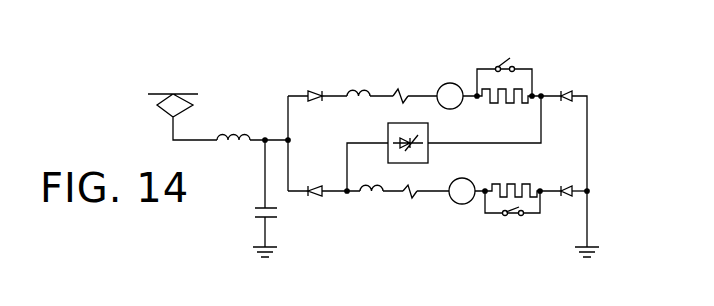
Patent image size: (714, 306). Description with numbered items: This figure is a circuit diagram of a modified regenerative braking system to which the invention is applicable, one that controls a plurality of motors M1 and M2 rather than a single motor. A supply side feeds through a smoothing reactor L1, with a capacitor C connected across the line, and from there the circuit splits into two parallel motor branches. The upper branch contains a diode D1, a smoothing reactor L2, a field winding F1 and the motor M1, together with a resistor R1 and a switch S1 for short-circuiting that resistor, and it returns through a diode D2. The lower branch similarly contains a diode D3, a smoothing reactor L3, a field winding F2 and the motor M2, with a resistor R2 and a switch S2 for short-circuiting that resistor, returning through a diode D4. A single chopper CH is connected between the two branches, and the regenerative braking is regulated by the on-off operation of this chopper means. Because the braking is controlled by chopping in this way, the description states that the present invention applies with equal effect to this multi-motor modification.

The smoothing reactor L1 is at (220, 133).
The capacitor C is at (257, 212).
The diode D1 is at (316, 88).
The smoothing reactor L2 is at (350, 88).
The field winding F1 is at (404, 88).
The motor M1 is at (449, 83).
The switch S1 is at (513, 48).
The resistor R1 is at (486, 104).
The diode D2 is at (566, 88).
The chopper CH is at (400, 123).
The diode D3 is at (320, 194).
The smoothing reactor L3 is at (372, 196).
The field winding F2 is at (408, 198).
The motor M2 is at (458, 205).
The resistor R2 is at (507, 183).
The switch S2 is at (508, 218).
The diode D4 is at (566, 196).